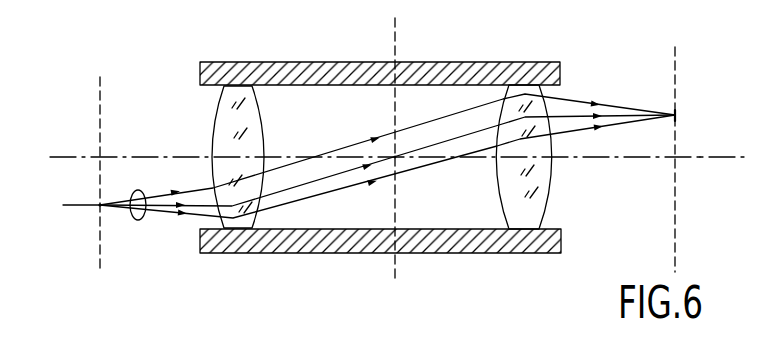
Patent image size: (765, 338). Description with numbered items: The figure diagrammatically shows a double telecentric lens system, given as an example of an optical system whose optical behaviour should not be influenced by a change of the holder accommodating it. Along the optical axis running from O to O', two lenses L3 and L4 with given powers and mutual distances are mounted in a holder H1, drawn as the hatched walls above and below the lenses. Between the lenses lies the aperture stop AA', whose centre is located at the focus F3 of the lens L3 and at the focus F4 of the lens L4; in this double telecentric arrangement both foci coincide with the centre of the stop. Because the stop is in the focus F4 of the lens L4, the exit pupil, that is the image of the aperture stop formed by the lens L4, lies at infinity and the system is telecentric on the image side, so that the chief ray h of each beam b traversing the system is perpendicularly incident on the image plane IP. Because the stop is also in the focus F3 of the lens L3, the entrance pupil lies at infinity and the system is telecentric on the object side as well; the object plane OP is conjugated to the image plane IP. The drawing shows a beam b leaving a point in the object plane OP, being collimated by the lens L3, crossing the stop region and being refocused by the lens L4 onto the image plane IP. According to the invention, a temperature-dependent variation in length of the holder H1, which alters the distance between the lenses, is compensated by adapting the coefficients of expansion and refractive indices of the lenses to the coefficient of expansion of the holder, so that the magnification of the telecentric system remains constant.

The optical axis O is at (368, 158).
The optical axis (image side) O' is at (723, 171).
The object plane OP is at (103, 163).
The image plane IP is at (686, 149).
The aperture stop A is at (402, 85).
The aperture stop A' is at (405, 222).
The holder H1 is at (478, 72).
The beam b is at (138, 222).
The lens L3 is at (213, 200).
The chief ray h is at (281, 195).
The focus of lens L3 F3 is at (434, 223).
The focus of lens L4 F4 is at (448, 225).
The lens L4 is at (538, 200).